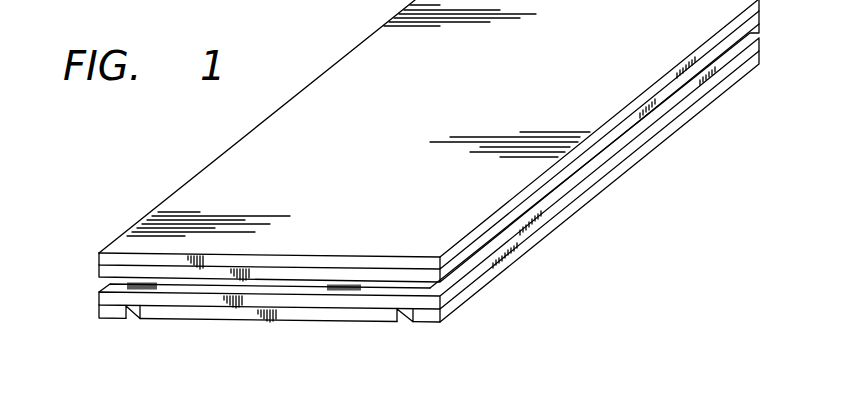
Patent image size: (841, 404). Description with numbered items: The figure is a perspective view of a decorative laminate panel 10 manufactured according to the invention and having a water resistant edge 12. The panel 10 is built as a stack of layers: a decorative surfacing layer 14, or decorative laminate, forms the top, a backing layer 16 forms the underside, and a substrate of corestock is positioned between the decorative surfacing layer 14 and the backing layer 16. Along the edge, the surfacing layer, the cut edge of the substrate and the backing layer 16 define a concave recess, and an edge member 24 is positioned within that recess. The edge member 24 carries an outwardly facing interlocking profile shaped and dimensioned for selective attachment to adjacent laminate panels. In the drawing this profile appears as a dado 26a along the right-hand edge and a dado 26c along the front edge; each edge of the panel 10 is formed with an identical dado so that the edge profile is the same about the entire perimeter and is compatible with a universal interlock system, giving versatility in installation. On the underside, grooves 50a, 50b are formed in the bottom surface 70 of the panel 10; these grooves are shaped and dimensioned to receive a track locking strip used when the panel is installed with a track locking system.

The decorative laminate panel 10 is at (127, 198).
The water resistant edge 12 is at (570, 177).
The decorative surfacing layer 14 is at (505, 223).
The backing layer 16 is at (462, 301).
The edge member 24 is at (98, 293).
The dado 26a is at (622, 147).
The dado 26c is at (312, 290).
The groove 50a is at (407, 323).
The groove 50b is at (134, 319).
The bottom surface 70 is at (232, 322).